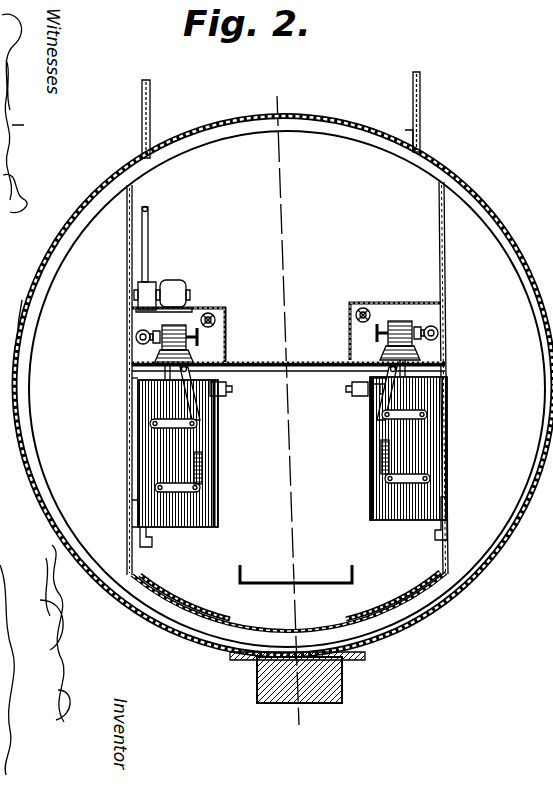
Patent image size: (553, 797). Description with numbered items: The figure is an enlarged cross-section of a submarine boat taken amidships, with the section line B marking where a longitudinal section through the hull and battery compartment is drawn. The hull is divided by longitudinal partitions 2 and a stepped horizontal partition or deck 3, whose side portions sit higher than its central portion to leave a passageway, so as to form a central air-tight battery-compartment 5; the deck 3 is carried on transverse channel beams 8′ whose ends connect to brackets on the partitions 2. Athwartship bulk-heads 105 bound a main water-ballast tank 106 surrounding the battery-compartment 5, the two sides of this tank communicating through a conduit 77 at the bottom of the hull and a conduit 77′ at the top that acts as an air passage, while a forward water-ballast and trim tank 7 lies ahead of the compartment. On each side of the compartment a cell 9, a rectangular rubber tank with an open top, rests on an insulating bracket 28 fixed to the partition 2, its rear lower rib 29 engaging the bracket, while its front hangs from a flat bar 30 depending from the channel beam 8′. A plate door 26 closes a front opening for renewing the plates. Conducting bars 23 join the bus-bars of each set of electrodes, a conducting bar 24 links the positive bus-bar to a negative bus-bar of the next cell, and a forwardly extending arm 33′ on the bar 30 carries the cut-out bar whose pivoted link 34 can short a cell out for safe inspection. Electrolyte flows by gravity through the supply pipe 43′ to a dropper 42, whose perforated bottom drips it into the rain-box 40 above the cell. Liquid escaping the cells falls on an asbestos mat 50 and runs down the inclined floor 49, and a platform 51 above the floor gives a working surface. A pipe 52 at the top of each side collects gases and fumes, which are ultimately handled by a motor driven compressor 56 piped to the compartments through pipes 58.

The longitudinal partition 2 is at (126, 283).
The horizontal partition or deck 3 is at (253, 362).
The battery-compartment 5 is at (295, 540).
The forward water-ballast and trim tank 7 is at (48, 282).
The transverse channel beam 8′ is at (282, 368).
The cell 9 is at (205, 511).
The conducting bar 23 is at (165, 485).
The conducting bar 24 is at (203, 468).
The plate door 26 is at (219, 489).
The bracket 28 is at (153, 542).
The rib 29 is at (135, 510).
The flat bar 30 is at (198, 406).
The forwardly extending arm 33′ is at (378, 390).
The link 34 is at (370, 380).
The rain-box 40 is at (140, 392).
The dropper 42 is at (158, 355).
The supply pipe 43′ is at (137, 334).
The inclined floor 49 is at (353, 622).
The mat 50 is at (176, 592).
The platform 51 is at (311, 578).
The pipe 52 is at (212, 313).
The motor driven compressor 56 is at (150, 292).
The pipe 58 is at (149, 230).
The conduit 77 is at (217, 626).
The conduit 77′ is at (425, 152).
The athwartship partition or bulk-head 105 is at (142, 590).
The main water-ballast tank 106 is at (135, 394).
The section line B— B is at (276, 422).